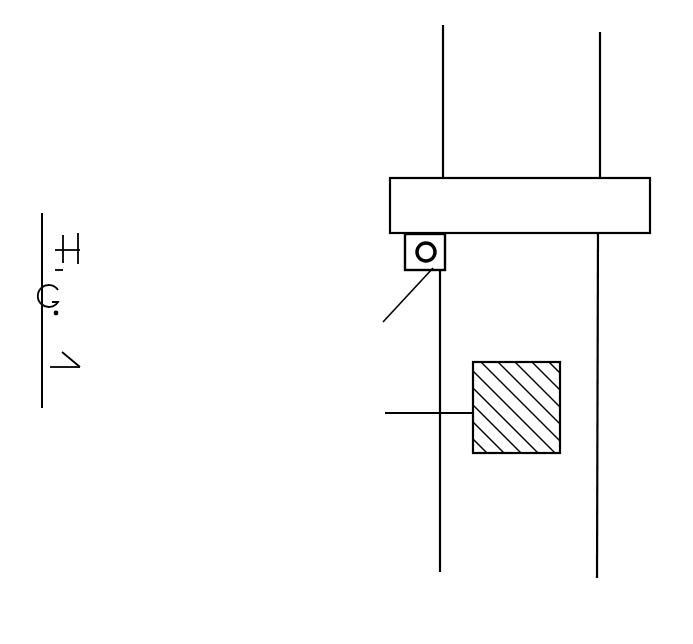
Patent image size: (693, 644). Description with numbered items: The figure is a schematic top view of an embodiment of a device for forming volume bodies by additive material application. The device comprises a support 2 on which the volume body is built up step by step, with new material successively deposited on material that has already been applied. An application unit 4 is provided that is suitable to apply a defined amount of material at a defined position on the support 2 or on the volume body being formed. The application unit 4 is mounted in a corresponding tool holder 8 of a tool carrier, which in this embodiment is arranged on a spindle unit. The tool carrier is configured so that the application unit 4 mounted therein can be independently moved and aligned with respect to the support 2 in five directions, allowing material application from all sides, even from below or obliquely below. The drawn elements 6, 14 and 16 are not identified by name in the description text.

The support 2 is at (452, 514).
The application unit 4 is at (400, 306).
The cross bar 6 is at (404, 200).
The tool holder 8 is at (440, 269).
The pivot block 14 is at (405, 251).
The weight block 16 is at (456, 407).